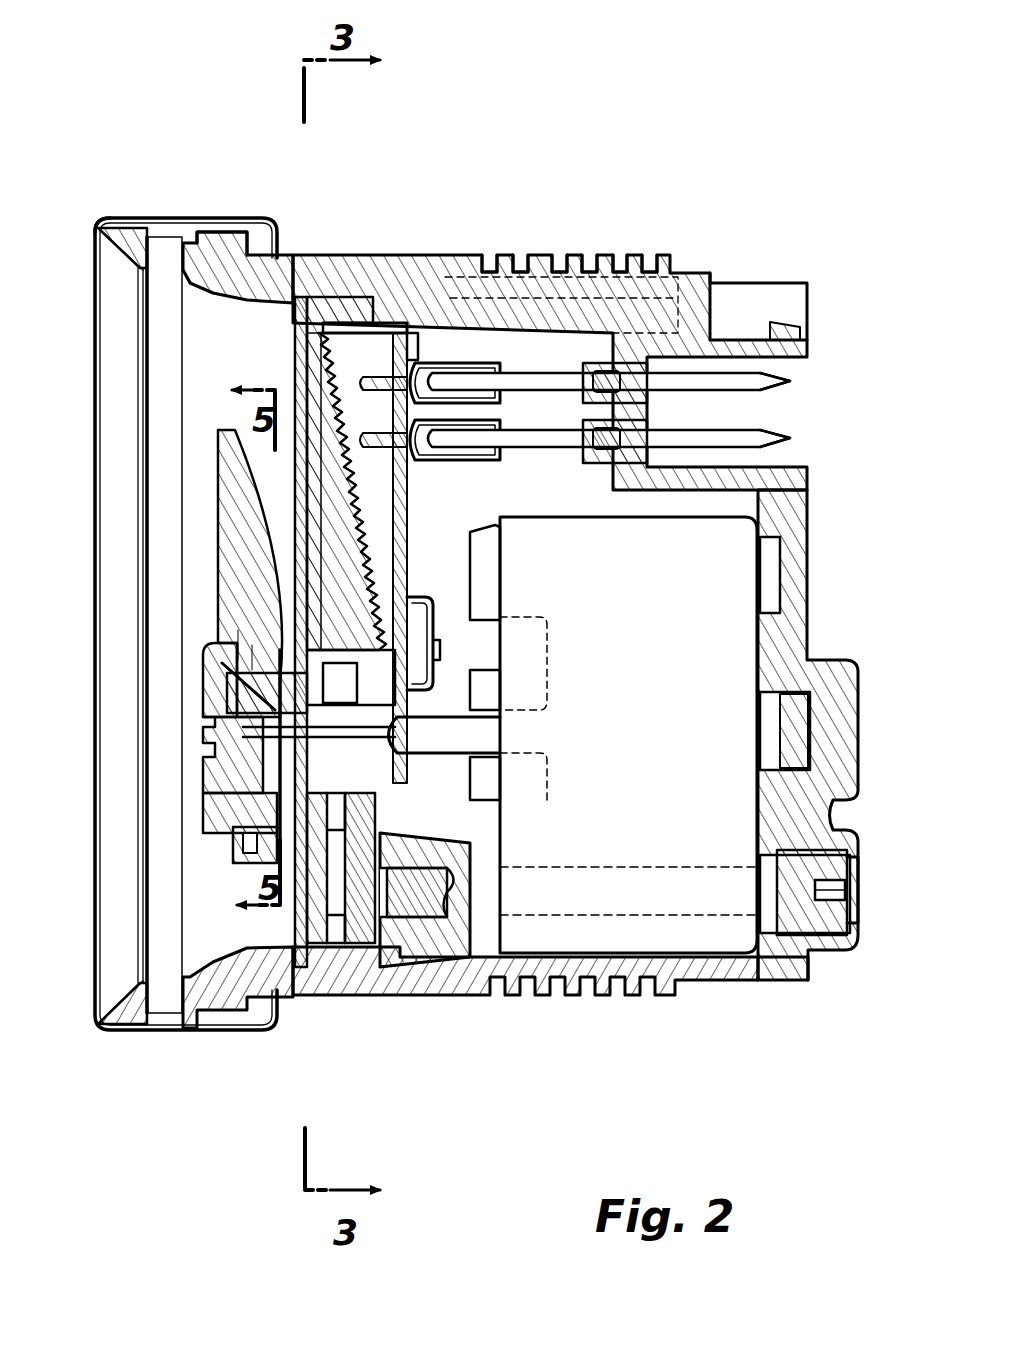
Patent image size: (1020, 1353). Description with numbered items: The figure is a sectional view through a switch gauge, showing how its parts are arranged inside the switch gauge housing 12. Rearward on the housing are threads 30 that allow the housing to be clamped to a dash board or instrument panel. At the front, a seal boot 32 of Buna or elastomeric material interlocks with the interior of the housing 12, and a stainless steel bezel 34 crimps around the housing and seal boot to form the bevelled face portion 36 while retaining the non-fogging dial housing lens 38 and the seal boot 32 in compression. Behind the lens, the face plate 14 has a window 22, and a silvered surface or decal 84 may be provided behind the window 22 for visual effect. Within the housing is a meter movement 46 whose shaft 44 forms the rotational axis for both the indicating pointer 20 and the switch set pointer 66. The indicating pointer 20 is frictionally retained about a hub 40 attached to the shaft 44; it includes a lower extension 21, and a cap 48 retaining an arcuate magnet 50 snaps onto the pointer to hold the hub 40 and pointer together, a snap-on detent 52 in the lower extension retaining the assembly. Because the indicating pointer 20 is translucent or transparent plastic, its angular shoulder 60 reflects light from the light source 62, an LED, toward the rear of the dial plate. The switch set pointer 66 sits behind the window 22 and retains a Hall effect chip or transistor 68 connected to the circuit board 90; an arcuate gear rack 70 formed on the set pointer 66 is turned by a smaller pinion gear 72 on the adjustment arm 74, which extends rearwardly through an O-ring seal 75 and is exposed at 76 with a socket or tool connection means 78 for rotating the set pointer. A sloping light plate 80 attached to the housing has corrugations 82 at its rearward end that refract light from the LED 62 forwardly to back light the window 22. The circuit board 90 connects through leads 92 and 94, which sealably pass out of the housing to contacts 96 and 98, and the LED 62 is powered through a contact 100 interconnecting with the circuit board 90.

The switch gauge housing 12 is at (369, 255).
The face plate 14 is at (294, 343).
The indicating pointer 20 is at (247, 560).
The lower extension 21 is at (247, 773).
The window 22 is at (298, 520).
The threads 30 is at (590, 253).
The seal boot 32 is at (114, 226).
The bezel 34 is at (217, 219).
The bevelled face portion 36 is at (96, 240).
The dial housing lens 38 is at (177, 235).
The hub 40 is at (203, 692).
The shaft 44 is at (407, 757).
The meter movement 46 is at (668, 657).
The cap 48 is at (217, 833).
The arcuate magnet 50 is at (240, 867).
The snap-on detent 52 is at (230, 800).
The angular shoulder 60 is at (237, 700).
The light source 62 is at (436, 648).
The switch set pointer 66 is at (322, 520).
The Hall effect chip or transistor 68 is at (313, 998).
The arcuate gear rack 70 is at (372, 808).
The pinion gear 72 is at (380, 838).
The adjustment arm 74 is at (423, 997).
The O-ring seal 75 is at (770, 980).
The exposed end 76 is at (847, 870).
The tool connection means 78 is at (837, 892).
The light plate 80 is at (419, 349).
The corrugations 82 is at (362, 495).
The silvered surface or decal 84 is at (296, 468).
The circuit board 90 is at (408, 325).
The lead 92 is at (530, 384).
The lead 94 is at (540, 442).
The contact 96 is at (747, 378).
The contact 98 is at (740, 432).
The contact 100 is at (422, 610).